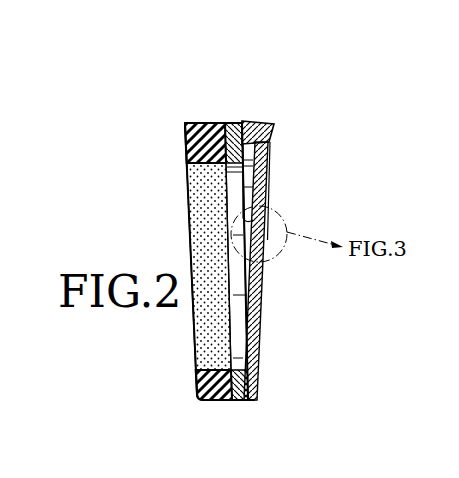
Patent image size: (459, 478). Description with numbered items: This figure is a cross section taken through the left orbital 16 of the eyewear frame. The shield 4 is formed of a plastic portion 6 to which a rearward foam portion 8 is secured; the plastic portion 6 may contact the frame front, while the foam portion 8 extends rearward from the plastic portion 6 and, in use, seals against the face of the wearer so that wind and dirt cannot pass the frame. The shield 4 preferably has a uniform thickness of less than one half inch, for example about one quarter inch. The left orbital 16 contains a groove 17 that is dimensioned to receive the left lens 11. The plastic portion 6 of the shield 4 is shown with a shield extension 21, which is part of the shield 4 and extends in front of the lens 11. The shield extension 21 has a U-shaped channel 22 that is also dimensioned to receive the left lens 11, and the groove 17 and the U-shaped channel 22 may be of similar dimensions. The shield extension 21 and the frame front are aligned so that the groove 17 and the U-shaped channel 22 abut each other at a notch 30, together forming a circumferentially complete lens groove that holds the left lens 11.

The shield 4 is at (207, 244).
The plastic portion 6 is at (227, 123).
The foam portion 8 is at (193, 123).
The left lens 11 is at (255, 338).
The left orbital 16 is at (262, 121).
The groove 17 is at (267, 190).
The shield extension 21 is at (235, 402).
The U-shaped channel 22 is at (258, 388).
The notch 30 is at (253, 222).